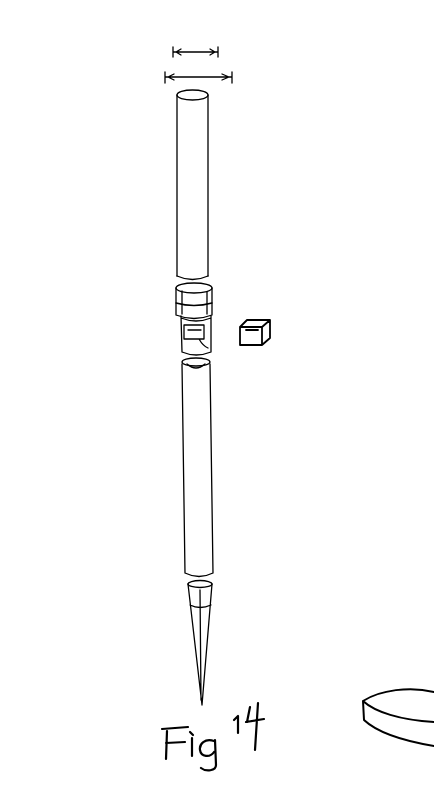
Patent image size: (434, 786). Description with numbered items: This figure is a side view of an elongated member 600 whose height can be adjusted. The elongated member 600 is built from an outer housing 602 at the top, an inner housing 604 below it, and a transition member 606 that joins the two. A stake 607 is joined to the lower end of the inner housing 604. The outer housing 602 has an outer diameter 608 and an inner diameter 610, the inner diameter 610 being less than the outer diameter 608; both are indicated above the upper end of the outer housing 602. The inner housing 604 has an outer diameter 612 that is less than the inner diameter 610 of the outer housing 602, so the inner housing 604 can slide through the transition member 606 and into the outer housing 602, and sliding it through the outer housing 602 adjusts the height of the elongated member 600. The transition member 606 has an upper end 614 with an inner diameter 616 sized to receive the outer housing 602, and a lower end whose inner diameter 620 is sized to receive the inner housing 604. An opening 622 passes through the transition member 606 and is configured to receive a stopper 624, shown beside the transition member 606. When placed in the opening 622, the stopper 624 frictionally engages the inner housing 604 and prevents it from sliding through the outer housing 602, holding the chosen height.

The elongated member 600 is at (297, 110).
The outer housing 602 is at (205, 222).
The inner housing 604 is at (211, 468).
The transition member 606 is at (214, 302).
The stake 607 is at (208, 637).
The outer diameter 608 is at (212, 77).
The inner diameter 610 is at (196, 51).
The outer diameter 612 is at (180, 362).
The upper end 614 is at (178, 293).
The inner diameter 616 is at (177, 304).
The inner diameter 620 is at (180, 348).
The opening 622 is at (204, 344).
The stopper 624 is at (268, 333).